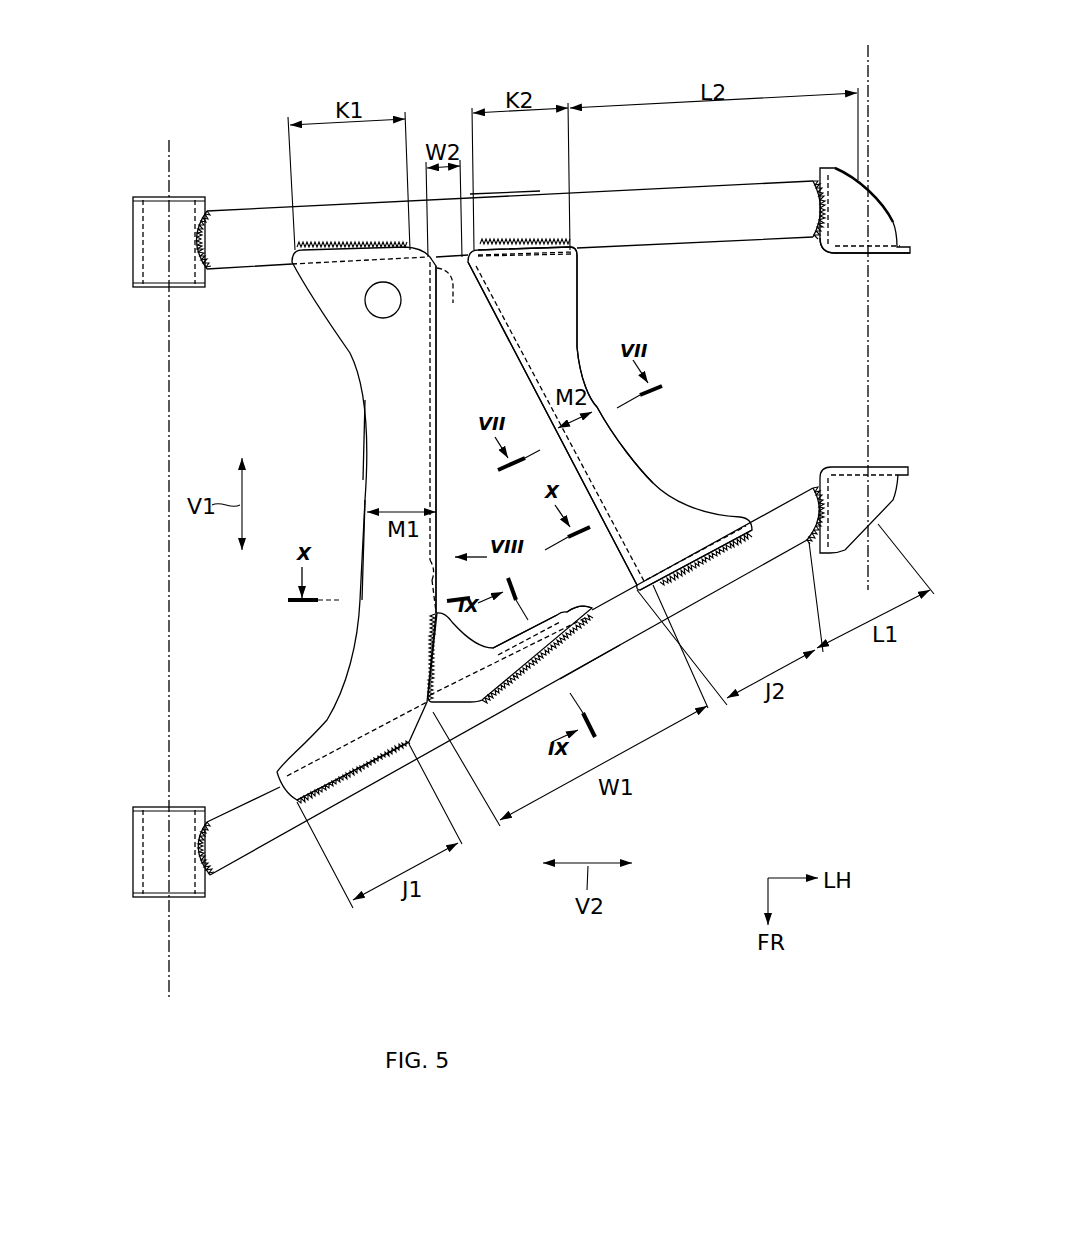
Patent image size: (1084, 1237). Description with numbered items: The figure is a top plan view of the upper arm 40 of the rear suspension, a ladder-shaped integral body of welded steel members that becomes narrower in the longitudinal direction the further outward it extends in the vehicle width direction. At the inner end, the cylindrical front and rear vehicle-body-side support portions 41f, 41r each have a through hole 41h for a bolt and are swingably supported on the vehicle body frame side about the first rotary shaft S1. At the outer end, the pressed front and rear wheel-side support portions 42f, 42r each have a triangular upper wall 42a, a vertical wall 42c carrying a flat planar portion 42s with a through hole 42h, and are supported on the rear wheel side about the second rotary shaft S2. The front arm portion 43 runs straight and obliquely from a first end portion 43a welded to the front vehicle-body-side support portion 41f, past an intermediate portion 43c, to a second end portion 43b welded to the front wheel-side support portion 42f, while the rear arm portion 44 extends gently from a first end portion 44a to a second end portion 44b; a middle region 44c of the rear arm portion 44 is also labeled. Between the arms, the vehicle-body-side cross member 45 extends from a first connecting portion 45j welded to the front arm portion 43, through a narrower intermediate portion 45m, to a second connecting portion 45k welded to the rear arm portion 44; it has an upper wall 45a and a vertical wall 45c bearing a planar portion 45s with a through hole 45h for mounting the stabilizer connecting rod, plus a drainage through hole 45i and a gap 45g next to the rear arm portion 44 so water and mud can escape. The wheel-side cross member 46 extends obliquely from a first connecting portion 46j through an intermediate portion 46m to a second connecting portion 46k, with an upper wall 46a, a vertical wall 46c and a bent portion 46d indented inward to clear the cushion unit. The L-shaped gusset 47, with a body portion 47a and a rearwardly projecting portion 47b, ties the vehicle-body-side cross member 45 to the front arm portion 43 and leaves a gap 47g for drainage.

The upper arm 40 is at (692, 53).
The rear vehicle-body-side support portion 41r is at (133, 214).
The front vehicle-body-side support portion 41f is at (133, 893).
The through hole 41h is at (156, 265).
The upper wall 42a is at (853, 197).
The front wheel-side support portion 42f is at (878, 515).
The rear wheel-side support portion 42r is at (893, 218).
The vertical wall 42c is at (825, 250).
The planar portion 42s is at (850, 255).
The through hole 42h is at (876, 255).
The front arm portion 43 is at (416, 768).
The first end portion 43a is at (213, 860).
The second end portion 43b is at (807, 542).
The intermediate portion 43c is at (583, 658).
The rear arm portion 44 is at (368, 208).
The first end portion 44a is at (222, 215).
The second end portion 44b is at (792, 182).
The rear tube middle portion 44c is at (498, 213).
The vehicle-body-side cross member 45 is at (358, 530).
The upper wall 45a is at (377, 477).
The vertical wall 45c is at (438, 427).
The gap 45g is at (462, 301).
The through hole 45h is at (443, 560).
The through hole 45i is at (378, 306).
The first connecting portion 45j is at (330, 785).
The second connecting portion 45k is at (330, 243).
The intermediate portion 45m is at (400, 478).
The planar portion 45s is at (437, 547).
The wheel-side cross member 46 is at (648, 478).
The upper wall 46a is at (565, 288).
The vertical wall 46c is at (505, 335).
The bent portion 46d is at (585, 365).
The first connecting portion 46j is at (710, 567).
The second connecting portion 46k is at (548, 240).
The intermediate portion 46m is at (592, 438).
The gusset 47 is at (455, 712).
The body portion 47a is at (497, 670).
The projecting portion 47b is at (535, 625).
The gap 47g is at (580, 614).
The first rotary shaft S1 is at (172, 160).
The second rotary shaft S2 is at (870, 75).